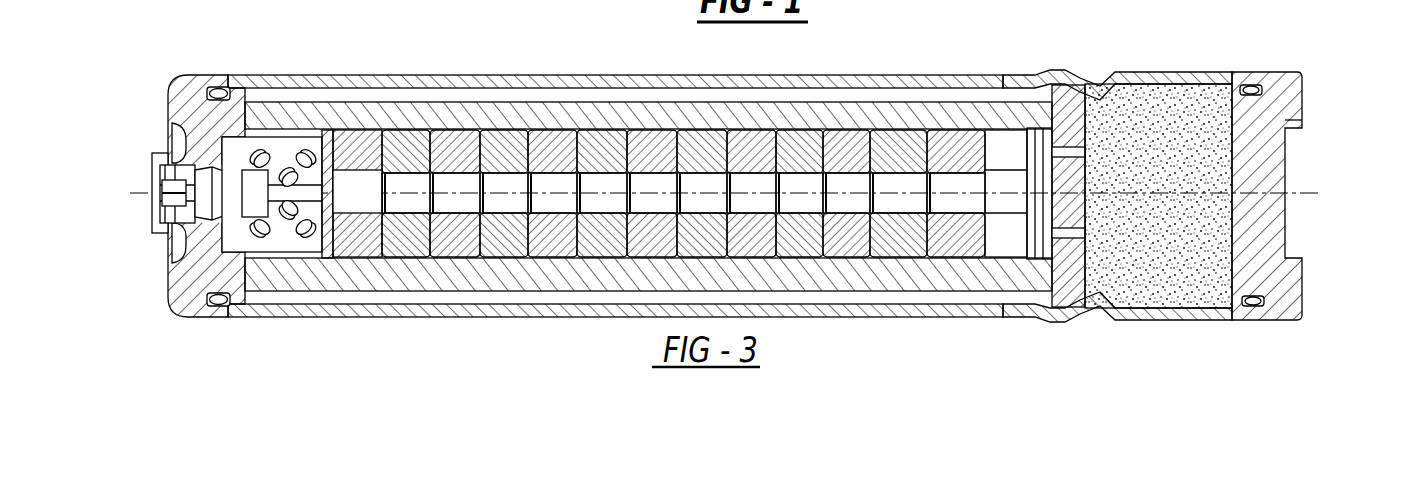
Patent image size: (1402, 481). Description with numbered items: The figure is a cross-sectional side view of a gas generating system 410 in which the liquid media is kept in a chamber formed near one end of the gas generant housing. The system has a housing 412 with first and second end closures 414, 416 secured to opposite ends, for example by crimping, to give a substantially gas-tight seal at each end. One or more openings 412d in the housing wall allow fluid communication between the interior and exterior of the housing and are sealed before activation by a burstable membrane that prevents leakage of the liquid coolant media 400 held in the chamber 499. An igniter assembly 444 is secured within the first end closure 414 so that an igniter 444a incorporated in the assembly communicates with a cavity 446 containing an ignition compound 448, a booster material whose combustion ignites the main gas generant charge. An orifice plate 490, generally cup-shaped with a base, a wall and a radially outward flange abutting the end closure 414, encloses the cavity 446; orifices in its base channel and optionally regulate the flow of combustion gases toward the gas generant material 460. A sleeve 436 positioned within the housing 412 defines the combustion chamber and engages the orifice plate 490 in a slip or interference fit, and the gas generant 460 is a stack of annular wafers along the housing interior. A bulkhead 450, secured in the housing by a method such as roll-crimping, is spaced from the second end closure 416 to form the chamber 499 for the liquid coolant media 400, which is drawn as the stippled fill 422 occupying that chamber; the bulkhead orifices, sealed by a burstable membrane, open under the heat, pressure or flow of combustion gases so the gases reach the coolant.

The liquid coolant media 400 is at (1128, 120).
The gas generating system 410 is at (942, 363).
The housing 412 is at (340, 313).
The openings 412d is at (1177, 313).
The first end closure 414 is at (217, 270).
The second end closure 416 is at (1265, 105).
The gas generant / filter material 422 is at (1168, 80).
The sleeve 436 is at (413, 270).
The igniter assembly 444 is at (185, 215).
The igniter 444a is at (248, 180).
The cavity 446 is at (280, 243).
The ignition compound 448 is at (262, 150).
The bulkhead 450 is at (1070, 273).
The gas generant material 460 is at (850, 238).
The orifice plate 490 is at (333, 153).
The chamber 499 is at (1170, 241).